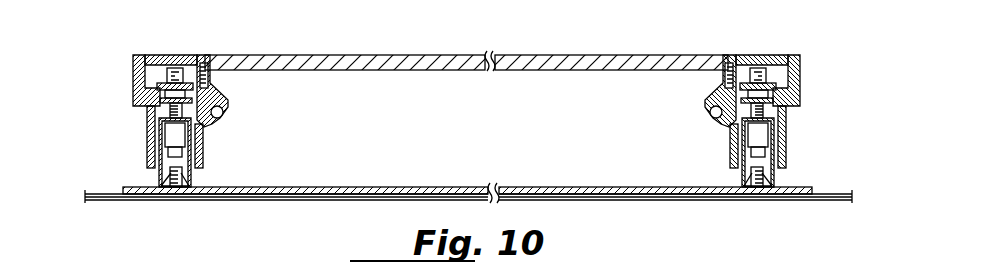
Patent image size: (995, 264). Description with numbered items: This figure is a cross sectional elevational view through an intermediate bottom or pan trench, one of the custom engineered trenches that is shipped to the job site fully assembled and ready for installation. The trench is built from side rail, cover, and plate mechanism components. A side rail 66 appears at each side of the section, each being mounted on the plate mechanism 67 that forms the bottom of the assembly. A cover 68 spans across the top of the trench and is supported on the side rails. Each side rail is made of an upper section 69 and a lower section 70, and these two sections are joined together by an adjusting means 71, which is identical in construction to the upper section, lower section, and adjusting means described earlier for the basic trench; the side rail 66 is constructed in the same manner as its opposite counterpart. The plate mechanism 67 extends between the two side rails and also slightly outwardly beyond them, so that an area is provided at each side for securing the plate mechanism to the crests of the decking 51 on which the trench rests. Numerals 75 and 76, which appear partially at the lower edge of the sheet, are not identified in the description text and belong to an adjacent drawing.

The decking 51 is at (300, 203).
The side rail 66 is at (130, 128).
The plate mechanism 67 is at (360, 182).
The cover 68 is at (298, 60).
The upper section 69 is at (238, 100).
The lower section 70 is at (200, 174).
The adjusting means 71 is at (178, 140).
The element 75 is at (35, 259).
The element 76 is at (803, 259).